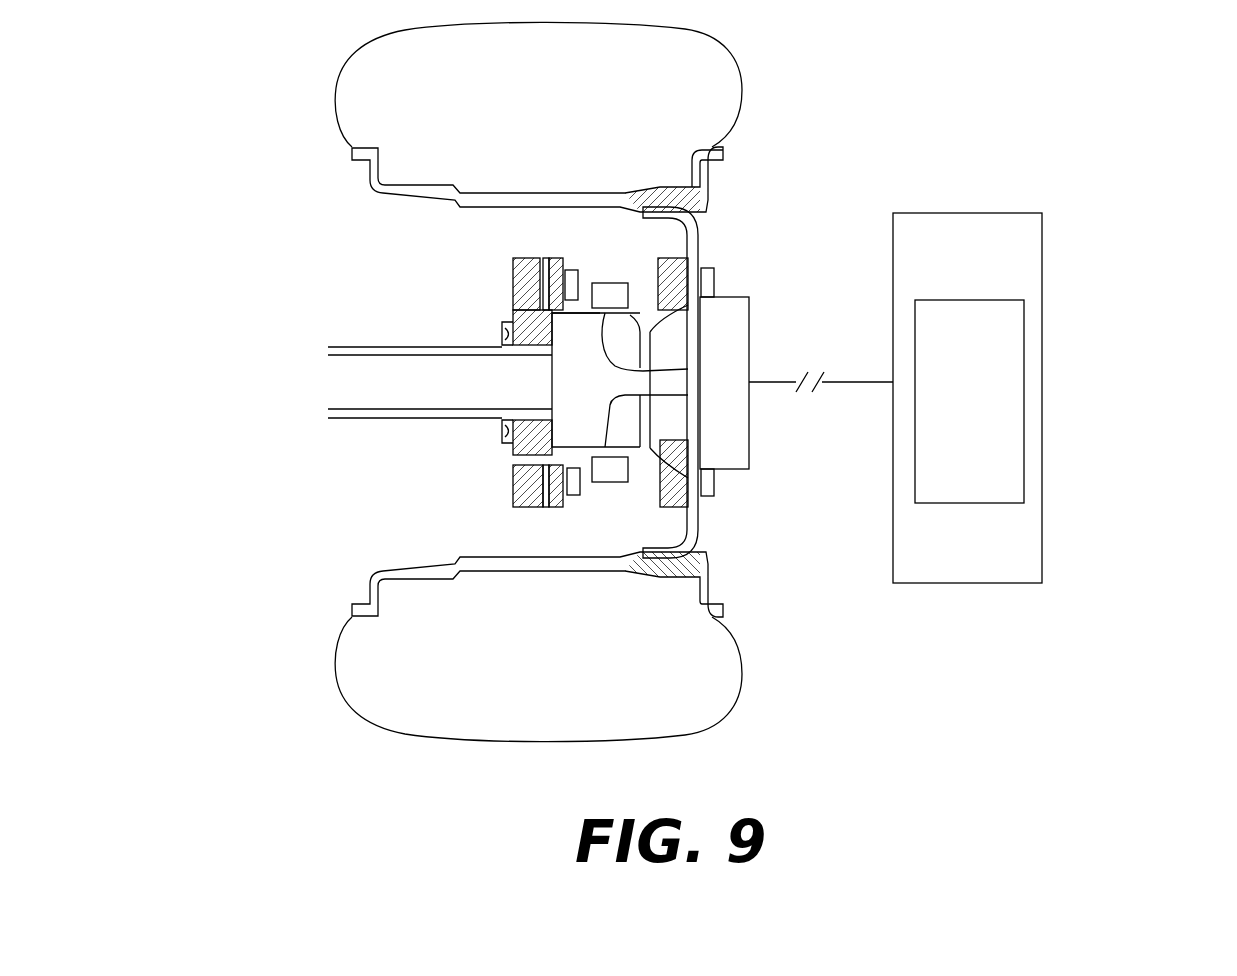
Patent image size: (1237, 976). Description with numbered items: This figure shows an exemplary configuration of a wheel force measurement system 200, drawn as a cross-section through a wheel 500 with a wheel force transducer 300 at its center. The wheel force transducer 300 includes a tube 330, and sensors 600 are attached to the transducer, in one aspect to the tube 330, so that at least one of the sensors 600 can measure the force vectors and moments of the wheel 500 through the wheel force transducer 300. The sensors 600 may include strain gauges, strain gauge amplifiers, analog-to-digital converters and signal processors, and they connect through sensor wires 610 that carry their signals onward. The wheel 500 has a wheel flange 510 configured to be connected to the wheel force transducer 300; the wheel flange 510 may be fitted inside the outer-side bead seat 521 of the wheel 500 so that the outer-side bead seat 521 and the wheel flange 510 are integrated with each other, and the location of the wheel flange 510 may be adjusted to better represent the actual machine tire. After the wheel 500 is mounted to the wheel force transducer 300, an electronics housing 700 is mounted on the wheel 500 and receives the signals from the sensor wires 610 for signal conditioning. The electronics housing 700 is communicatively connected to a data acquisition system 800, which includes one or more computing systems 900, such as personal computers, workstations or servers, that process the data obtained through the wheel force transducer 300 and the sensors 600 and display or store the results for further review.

The wheel force measurement system 200 is at (846, 226).
The wheel force transducer 300 is at (601, 514).
The tube 330 is at (596, 318).
The wheel 500 is at (356, 185).
The wheel flange 510 is at (700, 240).
The outer-side bead seat 521 is at (698, 193).
The sensors 600 is at (608, 283).
The sensor wires 610 is at (608, 405).
The electronics housing 700 is at (750, 473).
The data acquisition system 800 is at (1044, 296).
The computing systems 900 is at (1013, 482).